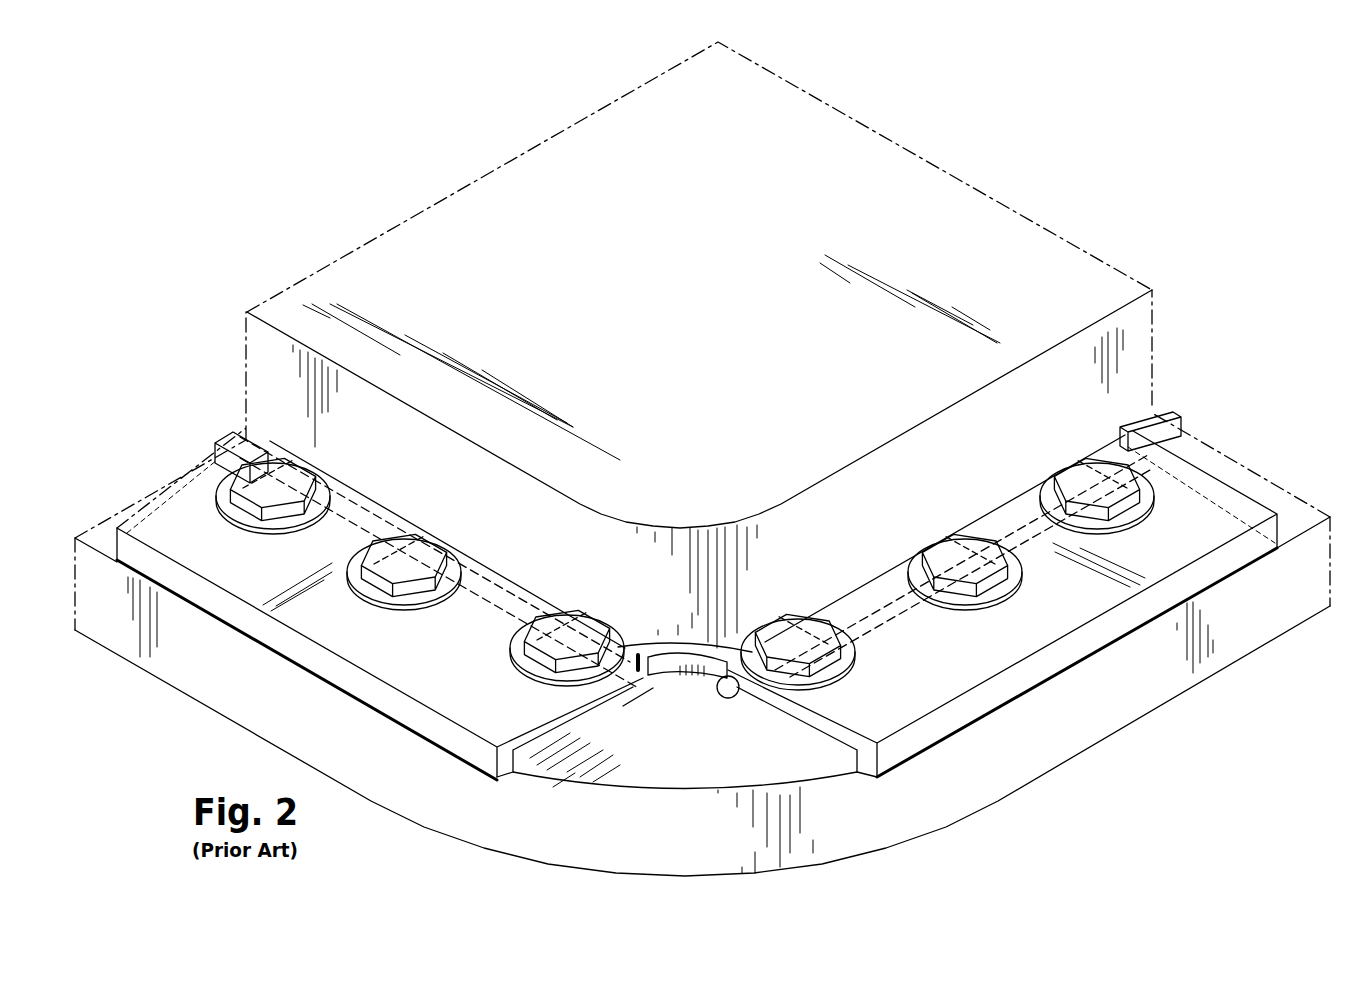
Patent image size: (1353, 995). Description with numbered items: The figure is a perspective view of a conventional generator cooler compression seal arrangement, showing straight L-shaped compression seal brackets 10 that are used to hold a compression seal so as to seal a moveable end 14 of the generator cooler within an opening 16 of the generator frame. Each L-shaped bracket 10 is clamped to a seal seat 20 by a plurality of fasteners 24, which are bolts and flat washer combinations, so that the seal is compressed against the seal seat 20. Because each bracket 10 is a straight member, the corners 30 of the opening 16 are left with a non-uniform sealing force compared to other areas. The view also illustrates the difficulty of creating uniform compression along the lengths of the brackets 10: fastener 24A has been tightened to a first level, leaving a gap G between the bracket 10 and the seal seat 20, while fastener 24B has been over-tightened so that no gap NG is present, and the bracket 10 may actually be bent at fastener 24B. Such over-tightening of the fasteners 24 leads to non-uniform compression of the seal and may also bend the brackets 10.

The L-shaped compression seal bracket 10 is at (1057, 577).
The moveable end 14 is at (638, 655).
The opening 16 is at (717, 652).
The seal seat 20 is at (708, 729).
The fasteners 24 is at (952, 558).
The fastener 24A is at (585, 637).
The fastener 24B is at (795, 665).
The corners 30 is at (675, 695).
The gap G is at (638, 712).
The no gap NG is at (735, 700).